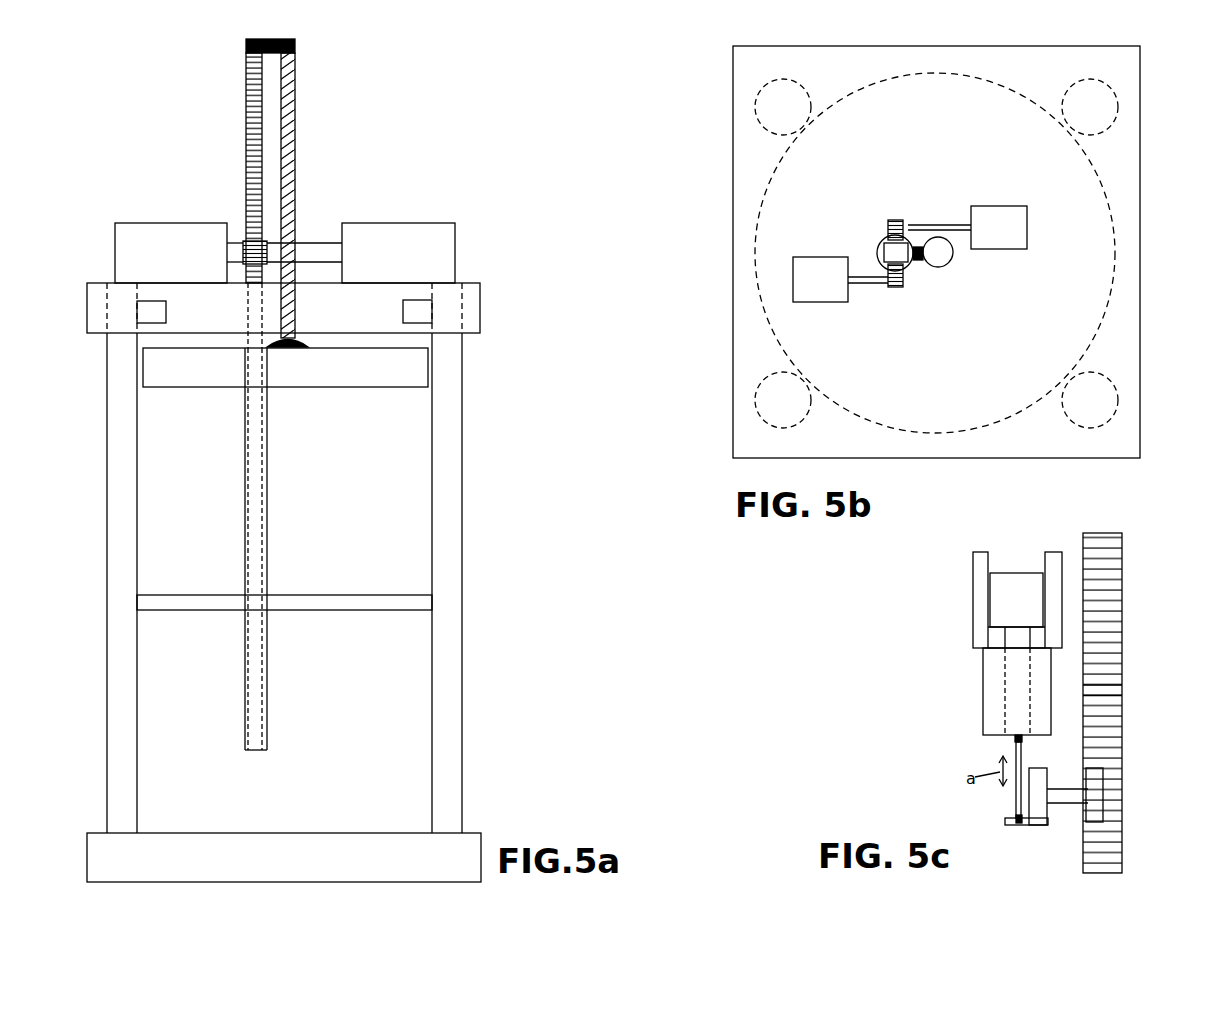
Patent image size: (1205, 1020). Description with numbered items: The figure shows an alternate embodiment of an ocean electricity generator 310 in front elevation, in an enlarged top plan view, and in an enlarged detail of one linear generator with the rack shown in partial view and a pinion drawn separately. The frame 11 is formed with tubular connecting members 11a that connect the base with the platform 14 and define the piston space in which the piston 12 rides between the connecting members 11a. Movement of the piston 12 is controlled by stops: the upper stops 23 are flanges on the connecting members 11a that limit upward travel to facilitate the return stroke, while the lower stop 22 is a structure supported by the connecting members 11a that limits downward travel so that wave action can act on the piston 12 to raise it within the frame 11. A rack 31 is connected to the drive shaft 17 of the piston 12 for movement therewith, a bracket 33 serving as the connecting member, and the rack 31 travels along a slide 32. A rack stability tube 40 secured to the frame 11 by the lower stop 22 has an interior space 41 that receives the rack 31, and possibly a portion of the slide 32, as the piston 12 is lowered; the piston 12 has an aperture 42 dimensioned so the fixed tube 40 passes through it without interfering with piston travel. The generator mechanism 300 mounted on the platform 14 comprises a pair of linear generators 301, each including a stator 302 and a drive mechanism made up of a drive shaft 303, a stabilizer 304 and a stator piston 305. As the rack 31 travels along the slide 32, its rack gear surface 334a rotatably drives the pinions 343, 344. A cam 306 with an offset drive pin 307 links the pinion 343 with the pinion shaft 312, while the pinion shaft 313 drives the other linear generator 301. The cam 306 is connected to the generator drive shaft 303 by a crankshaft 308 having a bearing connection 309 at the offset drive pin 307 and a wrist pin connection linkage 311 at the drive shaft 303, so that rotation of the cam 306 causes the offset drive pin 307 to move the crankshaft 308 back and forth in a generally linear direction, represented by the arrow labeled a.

In FIG. 5A, the frame 11 is at (473, 576).
In FIG. 5B, the frame 11 is at (991, 459).
In FIG. 5A, the connecting members 11a is at (125, 455).
In FIG. 5B, the connecting members 11a is at (780, 107).
In FIG. 5A, the piston 12 is at (395, 387).
In FIG. 5B, the piston 12 is at (948, 433).
In FIG. 5B, the platform 14 is at (733, 288).
In FIG. 5A, the drive shaft 17 is at (297, 160).
In FIG. 5B, the drive shaft 17 is at (942, 256).
In FIG. 5A, the lower stop 22 is at (165, 612).
In FIG. 5A, the upper stops 23 is at (148, 312).
In FIG. 5A, the rack 31 is at (257, 170).
In FIG. 5B, the rack 31 is at (902, 252).
In FIG. 5C, the rack 31 is at (1122, 648).
In FIG. 5A, the slide 32 is at (247, 138).
In FIG. 5B, the slide 32 is at (885, 248).
In FIG. 5C, the slide 32 is at (1085, 585).
In FIG. 5A, the bracket 33 is at (297, 46).
In FIG. 5B, the bracket 33 is at (925, 242).
In FIG. 5A, the rack stability tube 40 is at (267, 557).
In FIG. 5B, the rack stability tube 40 is at (905, 240).
In FIG. 5A, the interior space 41 is at (248, 538).
In FIG. 5A, the aperture 42 is at (247, 367).
In FIG. 5A, the generator mechanism 300 is at (151, 221).
In FIG. 5B, the generator mechanism 300 is at (995, 213).
In FIG. 5C, the linear generators 301 is at (885, 651).
In FIG. 5C, the stator 302 is at (980, 598).
In FIG. 5C, the drive shaft 303 is at (1018, 675).
In FIG. 5C, the stabilizer 304 is at (993, 693).
In FIG. 5C, the stator piston 305 is at (1015, 587).
In FIG. 5C, the cam 306 is at (1045, 826).
In FIG. 5C, the offset drive pin 307 is at (1025, 826).
In FIG. 5C, the crankshaft 308 is at (1015, 795).
In FIG. 5C, the bearing connection 309 is at (1012, 823).
In FIG. 5A, the ocean electricity generator 310 is at (392, 122).
In FIG. 5B, the ocean electricity generator 310 is at (697, 177).
In FIG. 5C, the wrist pin connection linkage 311 is at (1014, 738).
In FIG. 5A, the pinion shaft 312 is at (237, 252).
In FIG. 5B, the pinion shaft 312 is at (879, 284).
In FIG. 5C, the pinion shaft 312 is at (1062, 797).
In FIG. 5A, the pinion shaft 313 is at (318, 251).
In FIG. 5B, the pinion shaft 313 is at (946, 226).
In FIG. 5C, the rack gear surface 334a is at (1112, 690).
In FIG. 5A, the pinion 343 is at (251, 243).
In FIG. 5B, the pinion 343 is at (897, 288).
In FIG. 5C, the pinion 343 is at (1095, 790).
In FIG. 5B, the pinion 344 is at (897, 220).